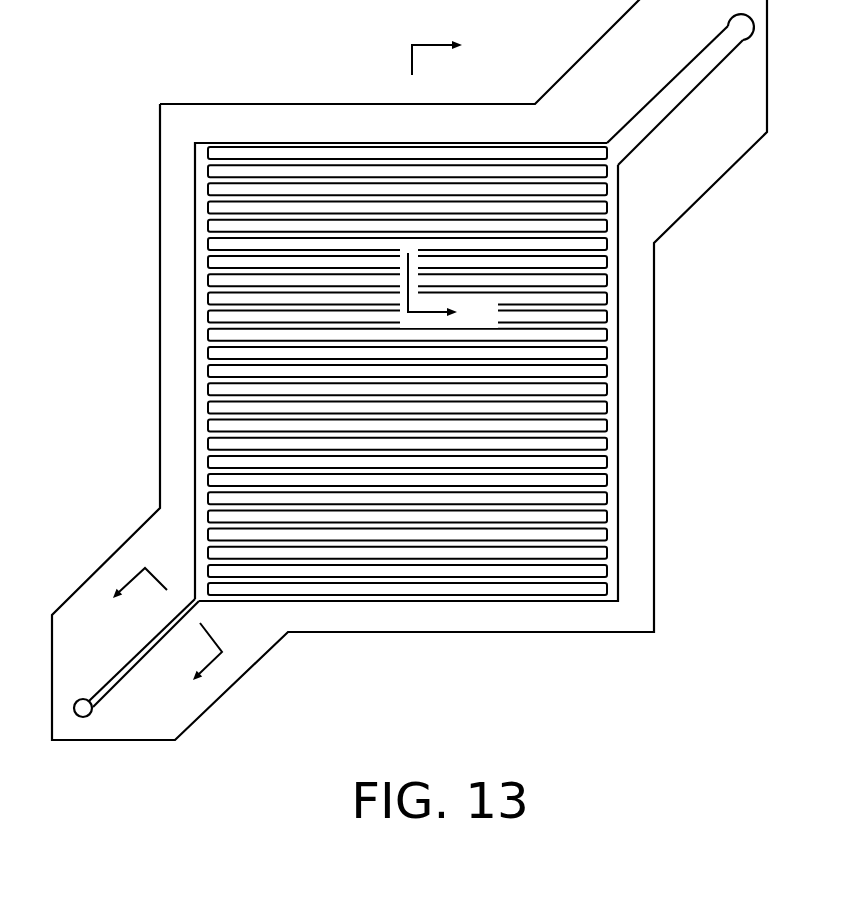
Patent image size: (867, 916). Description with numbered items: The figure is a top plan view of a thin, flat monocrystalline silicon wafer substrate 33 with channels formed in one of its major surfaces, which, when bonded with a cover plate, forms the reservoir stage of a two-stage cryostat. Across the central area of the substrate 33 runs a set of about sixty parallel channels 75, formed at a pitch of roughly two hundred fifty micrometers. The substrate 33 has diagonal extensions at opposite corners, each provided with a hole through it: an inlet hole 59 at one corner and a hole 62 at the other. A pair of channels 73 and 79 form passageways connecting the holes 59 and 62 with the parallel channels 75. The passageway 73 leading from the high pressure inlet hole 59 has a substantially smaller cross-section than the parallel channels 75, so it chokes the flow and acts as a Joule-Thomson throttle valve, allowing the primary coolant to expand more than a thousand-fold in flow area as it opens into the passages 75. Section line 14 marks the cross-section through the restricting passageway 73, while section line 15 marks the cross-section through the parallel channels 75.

The wafer substrate 33 is at (159, 265).
The parallel channels 75 is at (350, 165).
The channel 79 is at (665, 93).
The hole 62 is at (729, 24).
The restricting passageway 73 is at (110, 690).
The inlet hole 59 is at (80, 717).
The section line 15- 15 is at (453, 179).
The section line 14- 14 is at (154, 640).